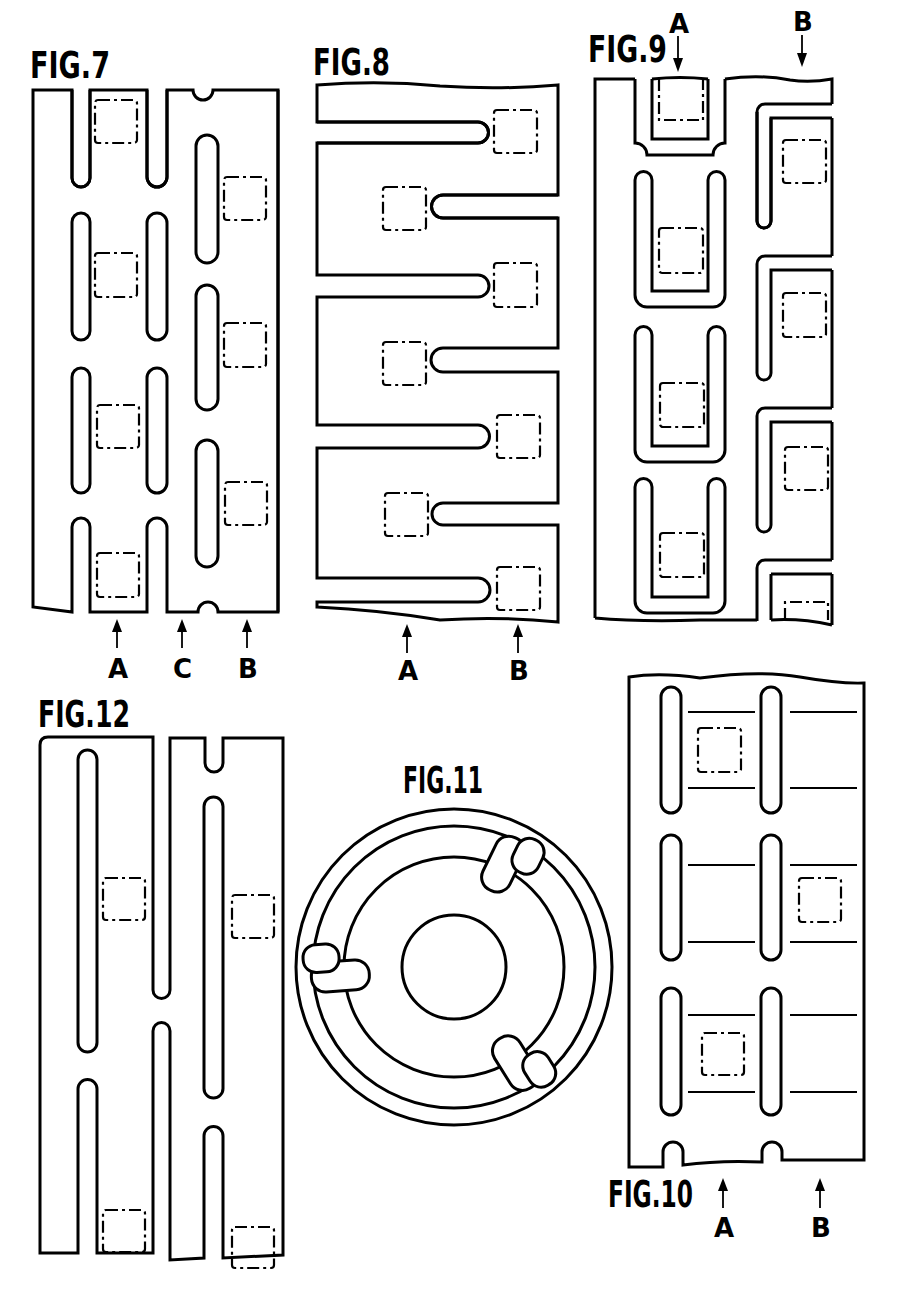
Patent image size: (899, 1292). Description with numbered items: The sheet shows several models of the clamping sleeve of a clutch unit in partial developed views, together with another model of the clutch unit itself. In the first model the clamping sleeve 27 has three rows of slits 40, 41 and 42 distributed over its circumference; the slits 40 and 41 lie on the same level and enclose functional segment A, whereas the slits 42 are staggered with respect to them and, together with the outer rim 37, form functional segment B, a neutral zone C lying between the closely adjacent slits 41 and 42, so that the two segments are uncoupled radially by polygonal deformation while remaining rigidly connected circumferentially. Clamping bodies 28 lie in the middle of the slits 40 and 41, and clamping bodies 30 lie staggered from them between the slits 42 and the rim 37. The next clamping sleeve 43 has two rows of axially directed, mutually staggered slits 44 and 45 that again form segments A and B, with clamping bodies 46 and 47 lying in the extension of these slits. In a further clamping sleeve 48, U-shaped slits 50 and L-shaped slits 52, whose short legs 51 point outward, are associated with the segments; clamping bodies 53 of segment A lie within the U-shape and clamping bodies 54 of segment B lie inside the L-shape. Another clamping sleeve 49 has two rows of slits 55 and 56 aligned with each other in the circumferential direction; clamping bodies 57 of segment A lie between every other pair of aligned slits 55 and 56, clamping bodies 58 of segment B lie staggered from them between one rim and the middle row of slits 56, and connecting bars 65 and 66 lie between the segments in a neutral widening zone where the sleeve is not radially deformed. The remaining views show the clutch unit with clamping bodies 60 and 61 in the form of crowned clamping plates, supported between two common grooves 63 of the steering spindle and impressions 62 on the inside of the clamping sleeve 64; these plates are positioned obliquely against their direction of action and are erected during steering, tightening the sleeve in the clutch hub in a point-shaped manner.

In FIG. 7, the clamping sleeve 27 is at (255, 118).
In FIG. 7, the clamping bodies 28 is at (121, 278).
In FIG. 7, the clamping bodies 30 is at (240, 345).
In FIG. 7, the outer rim 37 is at (286, 278).
In FIG. 7, the slits 40 is at (73, 166).
In FIG. 7, the slits 41 is at (152, 165).
In FIG. 7, the slits 42 is at (199, 163).
In FIG. 8, the clamping sleeve 43 is at (470, 100).
In FIG. 8, the slits 44 is at (383, 133).
In FIG. 8, the slits 45 is at (481, 208).
In FIG. 8, the clamping bodies 46 is at (395, 355).
In FIG. 8, the clamping bodies 47 is at (511, 285).
In FIG. 9, the clamping sleeve 48 is at (739, 108).
In FIG. 10, the clamping sleeve 49 is at (641, 820).
In FIG. 9, the U-shaped slits 50 is at (642, 353).
In FIG. 9, the short legs 51 is at (815, 108).
In FIG. 9, the L-shaped slits 52 is at (766, 182).
In FIG. 9, the clamping bodies 53 is at (689, 243).
In FIG. 9, the clamping bodies 54 is at (808, 320).
In FIG. 10, the slits 55 is at (666, 701).
In FIG. 10, the slits 56 is at (771, 703).
In FIG. 10, the clamping bodies 57 is at (724, 745).
In FIG. 10, the clamping bodies 58 is at (816, 895).
In FIG. 11, the clamping bodies 60 is at (534, 858).
In FIG. 12, the clamping bodies 60 is at (251, 905).
In FIG. 11, the clamping bodies 61 is at (507, 850).
In FIG. 12, the clamping bodies 61 is at (125, 890).
In FIG. 11, the impressions 62 is at (530, 1086).
In FIG. 11, the grooves 63 is at (524, 1050).
In FIG. 11, the clamping sleeve 64 is at (401, 1110).
In FIG. 12, the clamping sleeve 64 is at (263, 770).
In FIG. 10, the connecting bar 65 is at (670, 976).
In FIG. 10, the connecting bar 66 is at (775, 976).